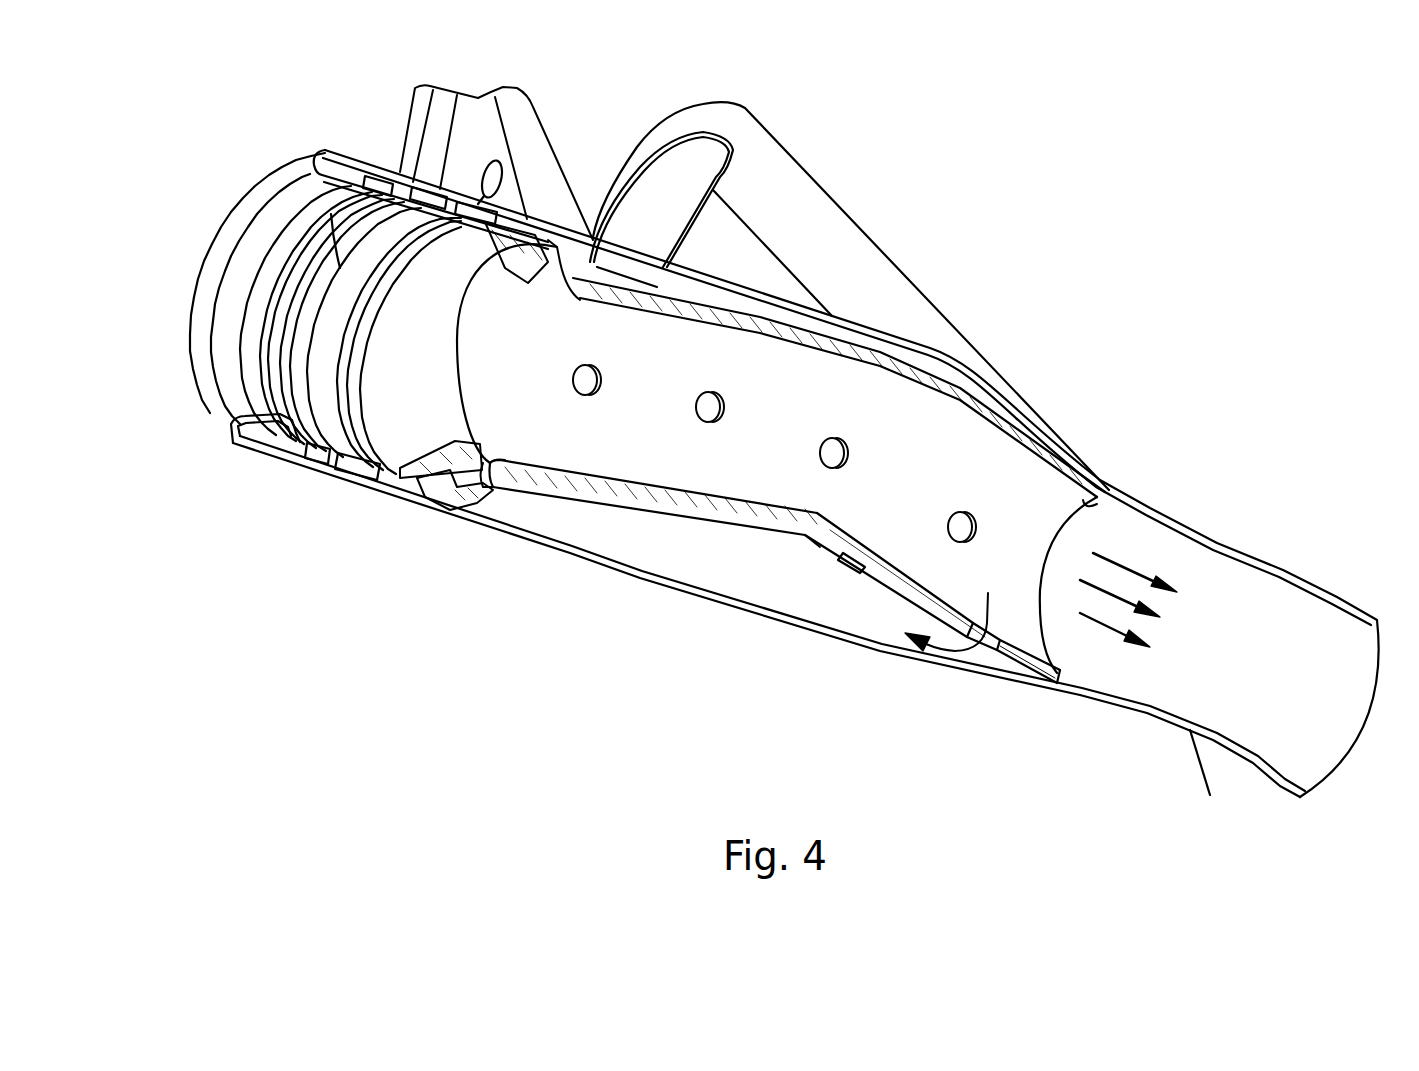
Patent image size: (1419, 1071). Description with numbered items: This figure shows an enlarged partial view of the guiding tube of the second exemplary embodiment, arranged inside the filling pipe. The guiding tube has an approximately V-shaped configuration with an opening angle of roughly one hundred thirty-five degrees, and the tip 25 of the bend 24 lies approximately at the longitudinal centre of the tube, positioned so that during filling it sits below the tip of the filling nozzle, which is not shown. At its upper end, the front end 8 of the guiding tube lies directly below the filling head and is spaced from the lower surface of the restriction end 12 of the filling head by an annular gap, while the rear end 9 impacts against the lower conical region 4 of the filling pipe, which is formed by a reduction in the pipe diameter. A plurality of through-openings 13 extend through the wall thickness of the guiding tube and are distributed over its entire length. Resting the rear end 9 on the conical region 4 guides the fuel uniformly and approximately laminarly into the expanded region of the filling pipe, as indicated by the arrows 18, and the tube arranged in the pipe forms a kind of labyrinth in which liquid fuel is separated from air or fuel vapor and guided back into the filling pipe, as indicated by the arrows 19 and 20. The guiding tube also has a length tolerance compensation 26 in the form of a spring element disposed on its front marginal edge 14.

The conical region 4 is at (1020, 683).
The front end 8 is at (517, 477).
The rear end 9 is at (1083, 502).
The restriction end 12 is at (447, 460).
The through-openings 13 is at (987, 643).
The front marginal edge 14 is at (560, 240).
The arrows 18 is at (1103, 627).
The arrows 19 is at (937, 650).
The arrows 20 is at (577, 518).
The bend 24 is at (813, 533).
The tip 25 is at (820, 530).
The length tolerance compensation 26 is at (503, 507).